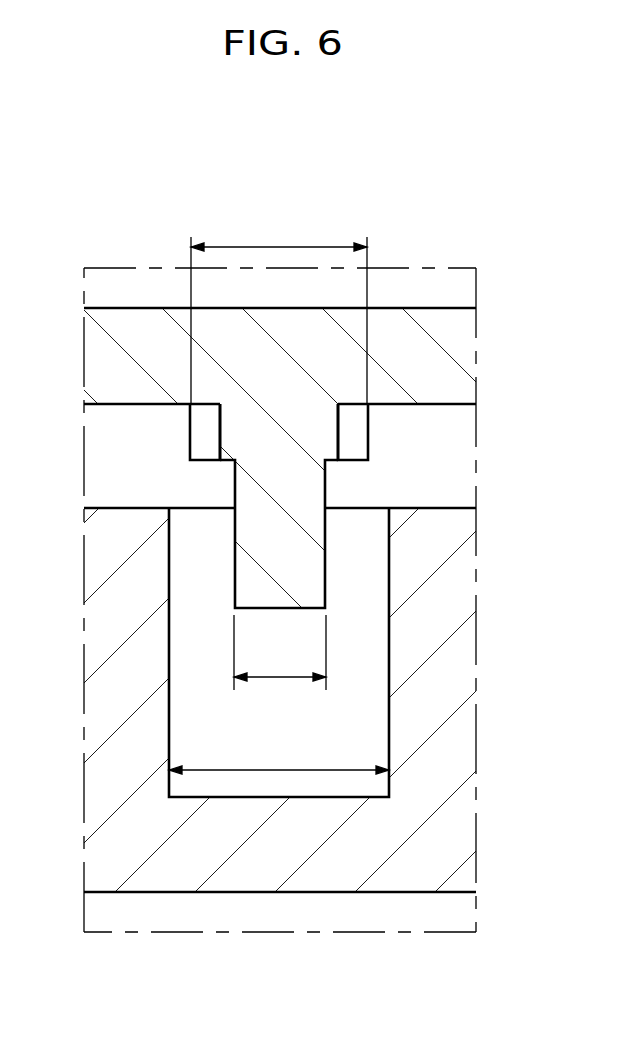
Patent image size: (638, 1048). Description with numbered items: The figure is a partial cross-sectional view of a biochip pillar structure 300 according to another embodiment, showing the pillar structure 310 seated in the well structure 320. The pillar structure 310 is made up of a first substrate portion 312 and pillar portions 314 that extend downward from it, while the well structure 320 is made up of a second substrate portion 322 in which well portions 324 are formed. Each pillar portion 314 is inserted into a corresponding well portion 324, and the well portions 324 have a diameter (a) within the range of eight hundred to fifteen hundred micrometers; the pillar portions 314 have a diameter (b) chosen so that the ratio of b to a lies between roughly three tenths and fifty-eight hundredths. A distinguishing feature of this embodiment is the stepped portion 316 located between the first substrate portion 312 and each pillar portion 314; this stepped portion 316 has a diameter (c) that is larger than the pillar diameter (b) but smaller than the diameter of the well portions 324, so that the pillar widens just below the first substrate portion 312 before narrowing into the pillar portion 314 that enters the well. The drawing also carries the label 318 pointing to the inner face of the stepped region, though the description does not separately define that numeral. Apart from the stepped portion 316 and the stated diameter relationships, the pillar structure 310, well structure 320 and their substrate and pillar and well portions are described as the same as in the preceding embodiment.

The biochip pillar structure 300 is at (96, 192).
The pillar structure 310 is at (412, 277).
The first substrate portion 312 is at (466, 357).
The pillar portions 314 is at (326, 496).
The stepped portion 316 is at (368, 423).
The spacer liner 318 is at (338, 435).
The well structure 320 is at (265, 921).
The second substrate portion 322 is at (466, 742).
The well portions 324 is at (390, 678).